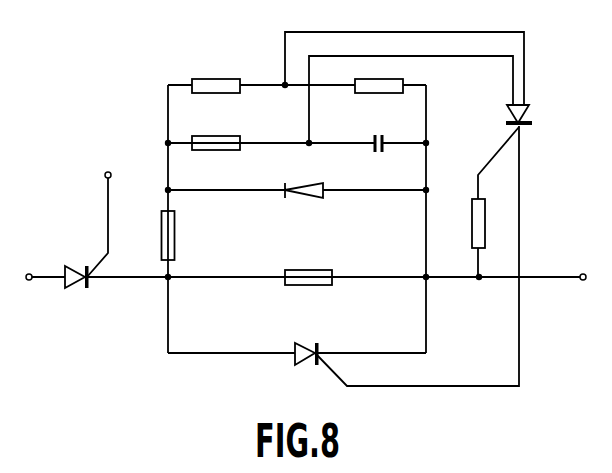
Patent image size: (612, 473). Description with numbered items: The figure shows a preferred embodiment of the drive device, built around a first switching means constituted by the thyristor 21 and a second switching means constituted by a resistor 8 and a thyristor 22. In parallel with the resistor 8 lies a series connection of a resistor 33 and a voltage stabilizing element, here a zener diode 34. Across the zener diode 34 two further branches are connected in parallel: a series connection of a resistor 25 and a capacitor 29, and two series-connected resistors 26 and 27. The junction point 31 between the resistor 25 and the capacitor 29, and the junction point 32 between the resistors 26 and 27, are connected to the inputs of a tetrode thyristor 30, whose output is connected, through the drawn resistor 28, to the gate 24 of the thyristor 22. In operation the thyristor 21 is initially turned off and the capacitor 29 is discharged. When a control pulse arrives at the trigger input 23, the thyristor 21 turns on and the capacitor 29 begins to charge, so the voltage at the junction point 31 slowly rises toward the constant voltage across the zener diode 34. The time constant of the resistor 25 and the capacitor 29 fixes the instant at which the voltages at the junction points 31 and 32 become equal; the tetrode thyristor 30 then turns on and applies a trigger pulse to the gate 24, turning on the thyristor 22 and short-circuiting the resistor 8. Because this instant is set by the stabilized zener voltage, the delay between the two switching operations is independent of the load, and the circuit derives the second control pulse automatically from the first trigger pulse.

The resistor 8 is at (305, 270).
The thyristor 21 is at (74, 266).
The thyristor 22 is at (304, 343).
The trigger input 23 is at (105, 178).
The gate 24 is at (420, 385).
The resistor 25 is at (209, 136).
The resistor 26 is at (209, 79).
The resistor 27 is at (365, 95).
The resistor 28 is at (471, 224).
The capacitor 29 is at (385, 138).
The tetrode thyristor 30 is at (530, 113).
The junction point 31 is at (307, 147).
The junction point 32 is at (285, 88).
The resistor 33 is at (176, 240).
The zener diode 34 is at (292, 198).